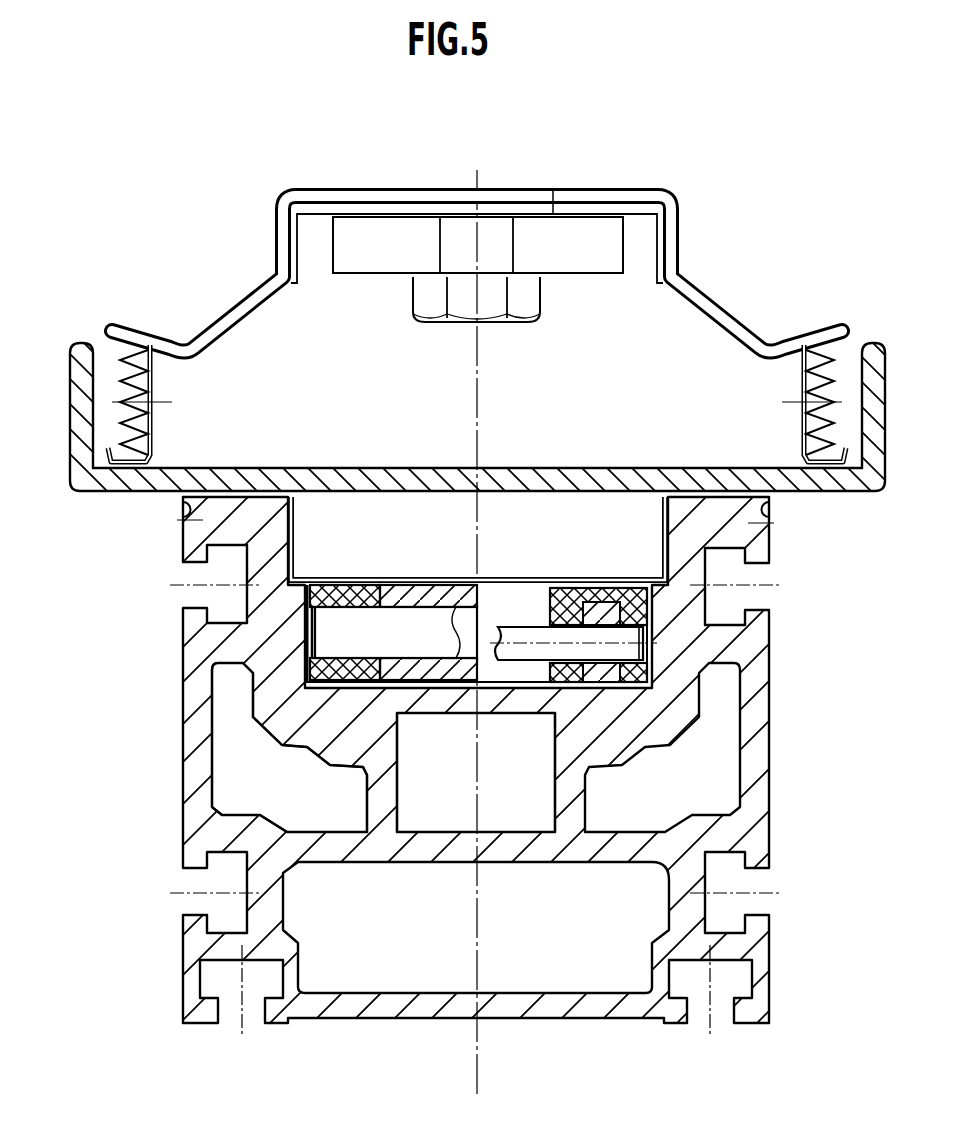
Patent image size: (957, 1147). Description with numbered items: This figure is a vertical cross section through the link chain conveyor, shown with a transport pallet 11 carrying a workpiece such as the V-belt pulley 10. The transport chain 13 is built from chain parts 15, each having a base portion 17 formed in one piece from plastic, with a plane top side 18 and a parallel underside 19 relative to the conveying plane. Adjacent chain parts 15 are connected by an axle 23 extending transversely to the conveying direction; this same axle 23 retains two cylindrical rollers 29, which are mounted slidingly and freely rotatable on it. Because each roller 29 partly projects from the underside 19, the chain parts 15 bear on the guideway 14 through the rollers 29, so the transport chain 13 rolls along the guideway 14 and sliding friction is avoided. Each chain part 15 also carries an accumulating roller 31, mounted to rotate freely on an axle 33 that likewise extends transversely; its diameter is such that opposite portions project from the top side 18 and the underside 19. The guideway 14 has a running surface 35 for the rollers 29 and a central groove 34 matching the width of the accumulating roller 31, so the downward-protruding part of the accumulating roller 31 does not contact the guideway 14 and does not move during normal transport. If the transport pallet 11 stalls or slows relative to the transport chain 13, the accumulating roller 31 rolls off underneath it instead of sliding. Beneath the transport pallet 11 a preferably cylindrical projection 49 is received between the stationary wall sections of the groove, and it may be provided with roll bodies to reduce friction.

The V-belt pulley 10 is at (715, 313).
The transport pallet 11 is at (123, 500).
The transport chain 13 is at (442, 718).
The guideway 14 is at (752, 722).
The chain part 15 is at (305, 675).
The base portion 17 is at (215, 673).
The top side 18 is at (330, 578).
The underside 19 is at (285, 747).
The axle 23 is at (527, 650).
The roller 29 is at (607, 590).
The accumulating roller 31 is at (410, 583).
The axle 33 is at (327, 640).
The central groove 34 is at (386, 684).
The running surface 35 is at (330, 690).
The projection 49 is at (562, 551).